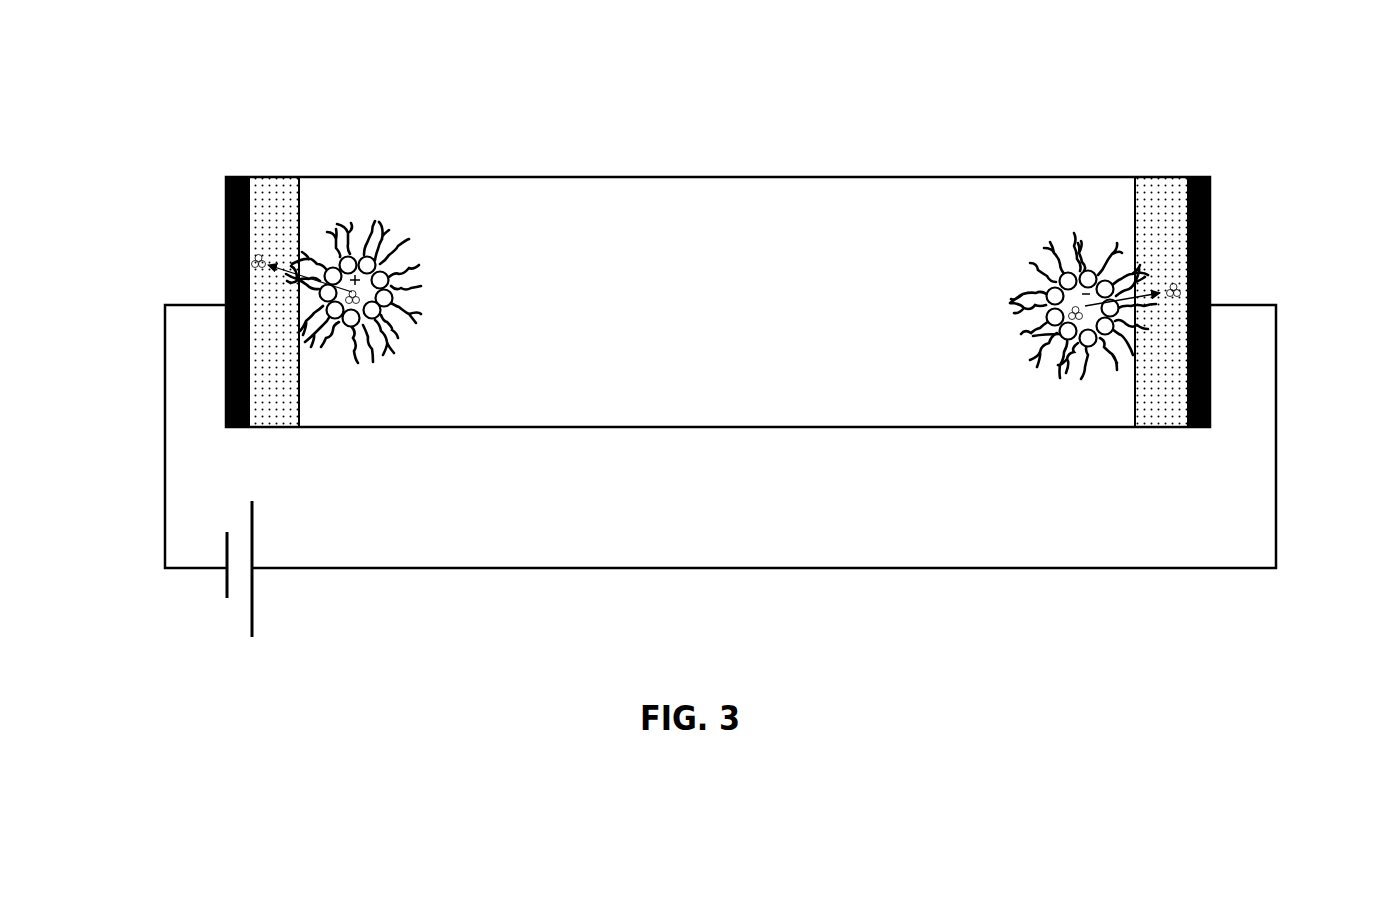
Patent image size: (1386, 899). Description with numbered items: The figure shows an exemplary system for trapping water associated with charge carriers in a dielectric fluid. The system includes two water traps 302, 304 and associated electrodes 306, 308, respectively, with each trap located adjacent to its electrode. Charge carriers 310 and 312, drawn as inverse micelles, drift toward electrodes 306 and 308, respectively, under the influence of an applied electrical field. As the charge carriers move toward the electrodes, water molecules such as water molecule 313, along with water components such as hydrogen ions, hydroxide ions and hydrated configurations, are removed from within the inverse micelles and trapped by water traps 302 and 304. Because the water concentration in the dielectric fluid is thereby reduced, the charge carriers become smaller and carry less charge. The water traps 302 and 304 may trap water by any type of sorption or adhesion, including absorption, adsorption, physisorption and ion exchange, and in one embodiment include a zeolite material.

The water trap 302 is at (275, 218).
The water trap 304 is at (1160, 228).
The electrode 306 is at (226, 263).
The electrode 308 is at (1211, 248).
The charge carrier 310 is at (360, 222).
The charge carrier 312 is at (1098, 252).
The water molecule 313 is at (1033, 336).